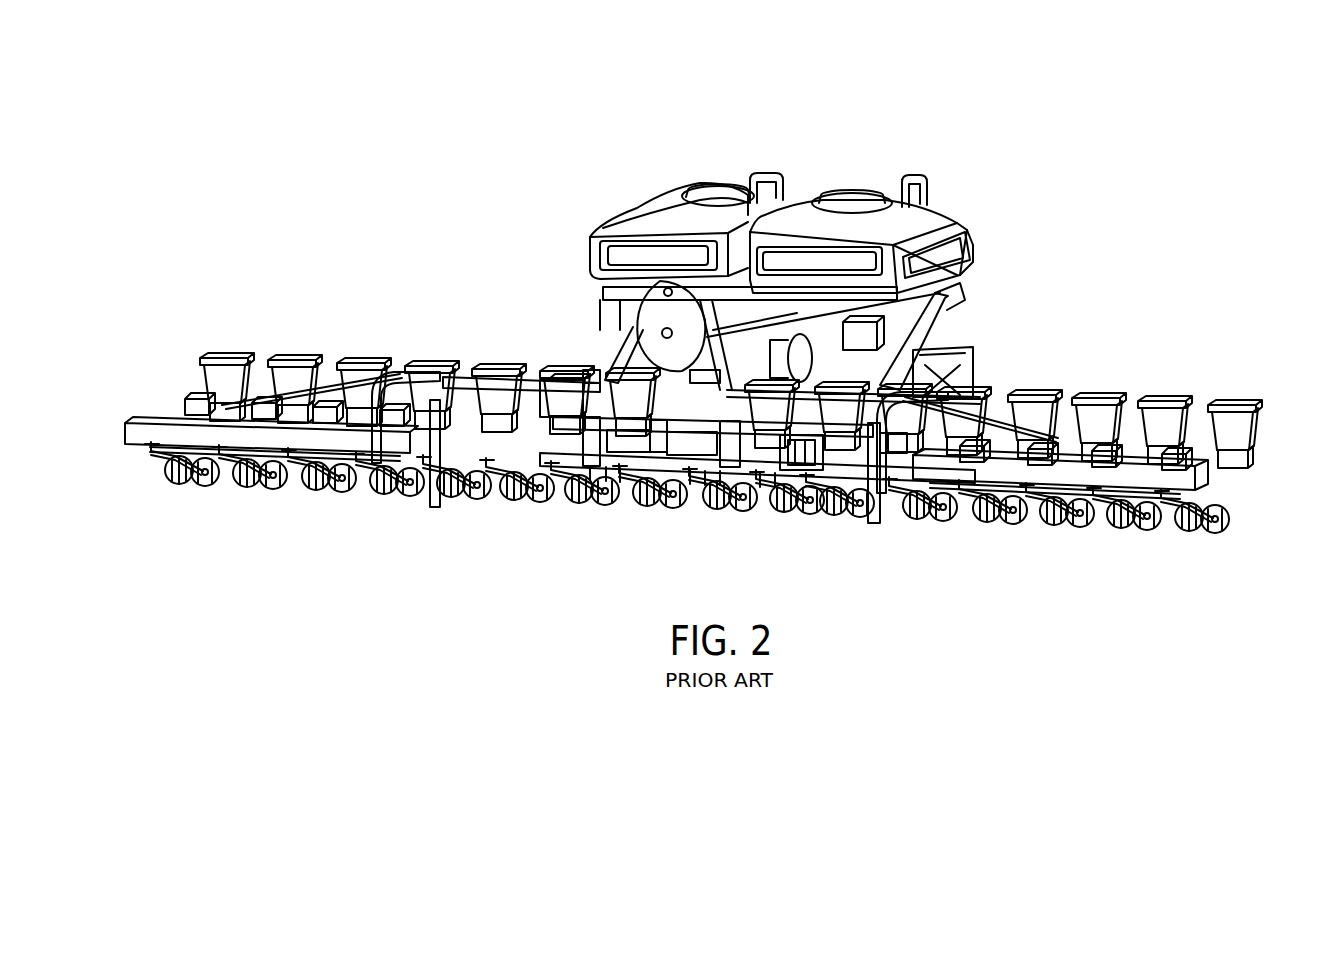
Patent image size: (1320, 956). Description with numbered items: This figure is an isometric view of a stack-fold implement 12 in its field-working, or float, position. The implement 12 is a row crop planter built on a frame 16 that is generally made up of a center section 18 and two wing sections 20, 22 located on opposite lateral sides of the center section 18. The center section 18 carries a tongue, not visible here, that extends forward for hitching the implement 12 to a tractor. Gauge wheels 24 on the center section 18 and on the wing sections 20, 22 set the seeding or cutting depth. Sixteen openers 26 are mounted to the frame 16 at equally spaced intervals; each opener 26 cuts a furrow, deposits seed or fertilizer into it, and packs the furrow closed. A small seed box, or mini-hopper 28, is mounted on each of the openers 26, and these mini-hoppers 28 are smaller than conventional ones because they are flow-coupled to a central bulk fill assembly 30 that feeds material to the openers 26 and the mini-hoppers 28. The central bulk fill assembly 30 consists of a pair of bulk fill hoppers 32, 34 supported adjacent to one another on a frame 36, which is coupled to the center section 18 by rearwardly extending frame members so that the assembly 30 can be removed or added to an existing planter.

The stack-fold implement 12 is at (318, 116).
The frame 16 is at (1128, 527).
The center section 18 is at (677, 457).
The wing section 20 is at (160, 437).
The wing section 22 is at (1165, 483).
The gauge wheels 24 is at (344, 489).
The openers 26 is at (465, 516).
The mini-hoppers 28 is at (288, 372).
The central bulk fill assembly 30 is at (986, 182).
The bulk fill hopper 32 is at (943, 231).
The bulk fill hopper 34 is at (641, 216).
The frame 36 is at (943, 305).